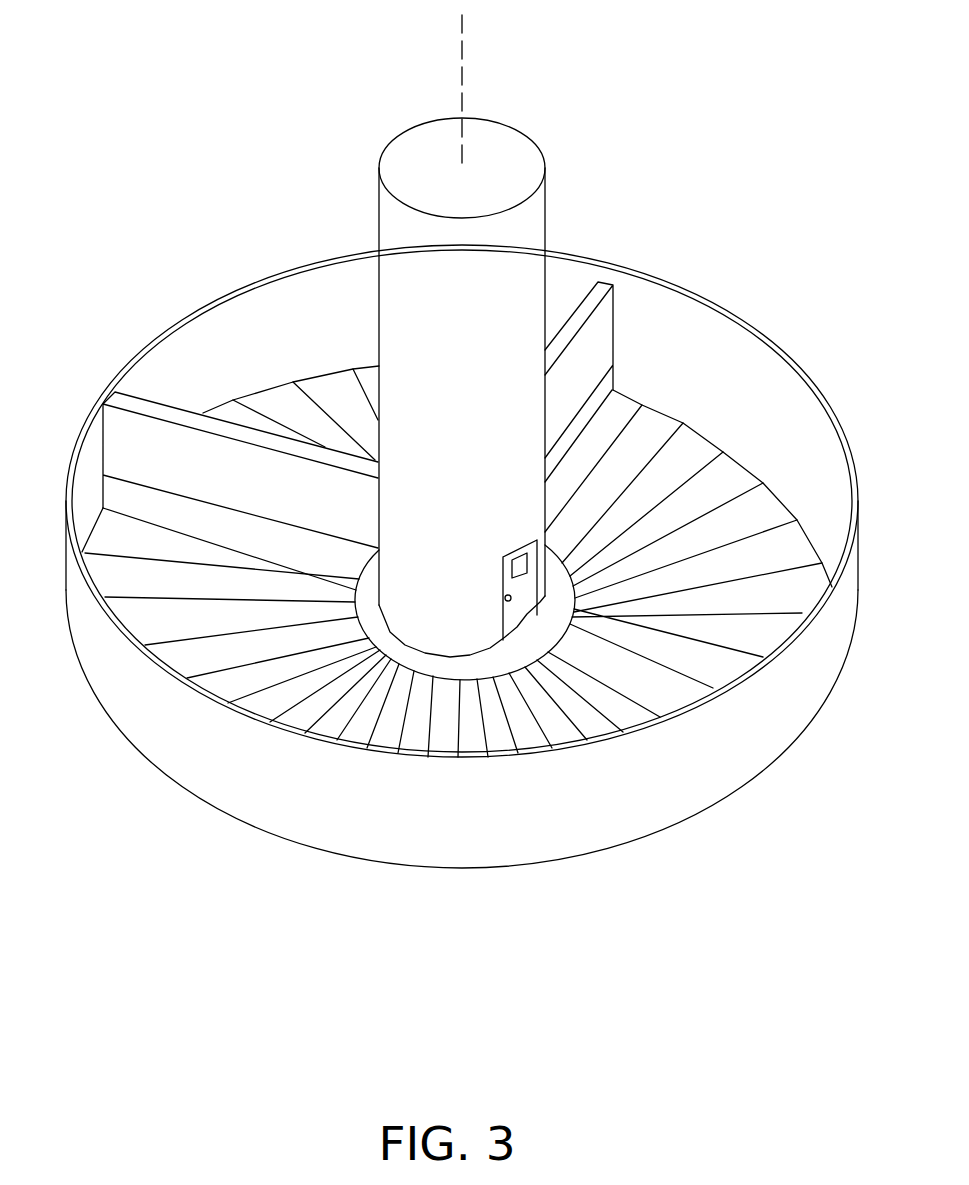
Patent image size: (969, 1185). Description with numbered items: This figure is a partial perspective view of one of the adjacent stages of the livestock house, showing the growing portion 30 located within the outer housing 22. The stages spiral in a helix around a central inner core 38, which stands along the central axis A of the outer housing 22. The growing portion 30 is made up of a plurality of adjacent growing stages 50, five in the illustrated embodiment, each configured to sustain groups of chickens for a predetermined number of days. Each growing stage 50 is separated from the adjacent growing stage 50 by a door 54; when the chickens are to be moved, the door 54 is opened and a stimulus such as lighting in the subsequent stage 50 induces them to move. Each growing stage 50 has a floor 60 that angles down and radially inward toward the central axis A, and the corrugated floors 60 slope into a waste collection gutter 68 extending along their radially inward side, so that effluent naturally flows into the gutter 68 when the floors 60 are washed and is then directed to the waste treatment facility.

The central axis A is at (463, 57).
The outer housing 22 is at (219, 298).
The growing portion 30 is at (702, 213).
The inner core 38 is at (447, 379).
The growing stage 50 is at (306, 313).
The door 54 is at (143, 403).
The floor 60 is at (770, 598).
The waste collection gutter 68 is at (497, 652).